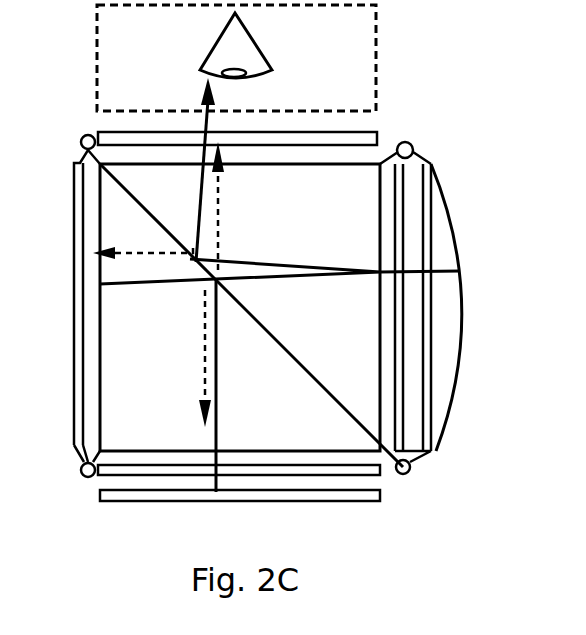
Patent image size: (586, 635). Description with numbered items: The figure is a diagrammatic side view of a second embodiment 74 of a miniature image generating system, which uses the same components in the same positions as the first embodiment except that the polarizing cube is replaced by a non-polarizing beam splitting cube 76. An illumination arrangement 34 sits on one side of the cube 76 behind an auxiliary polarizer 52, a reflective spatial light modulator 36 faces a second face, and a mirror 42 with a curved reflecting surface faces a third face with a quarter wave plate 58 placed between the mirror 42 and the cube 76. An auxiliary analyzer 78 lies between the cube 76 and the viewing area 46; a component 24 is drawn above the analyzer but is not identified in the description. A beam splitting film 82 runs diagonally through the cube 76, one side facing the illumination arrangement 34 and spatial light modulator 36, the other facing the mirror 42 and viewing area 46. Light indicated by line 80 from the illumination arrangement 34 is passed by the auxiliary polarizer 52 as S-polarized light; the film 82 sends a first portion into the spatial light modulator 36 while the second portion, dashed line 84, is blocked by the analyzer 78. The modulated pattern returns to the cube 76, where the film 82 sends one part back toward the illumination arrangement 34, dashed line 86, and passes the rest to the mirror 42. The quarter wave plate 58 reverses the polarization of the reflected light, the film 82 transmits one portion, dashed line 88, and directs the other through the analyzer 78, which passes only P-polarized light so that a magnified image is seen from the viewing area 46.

The light source 24 is at (246, 52).
The illumination arrangement 34 is at (192, 497).
The spatial light modulator 36 is at (72, 177).
The mirror 42 is at (440, 387).
The viewing area 46 is at (120, 67).
The auxiliary polarizer 52 is at (257, 472).
The quarter wave plate 58 is at (400, 435).
The second embodiment of the image generating system 74 is at (392, 60).
The non-polarizing beam splitting cube 76 is at (86, 478).
The auxiliary analyzer 78 is at (158, 133).
The line indicating illumination light 80 is at (203, 335).
The beam splitting film 82 is at (263, 330).
The dashed line indicating blocked light 84 is at (218, 223).
The dashed line indicating returned modulated light 86 is at (203, 297).
The dashed line indicating transmitted mirror light 88 is at (152, 253).